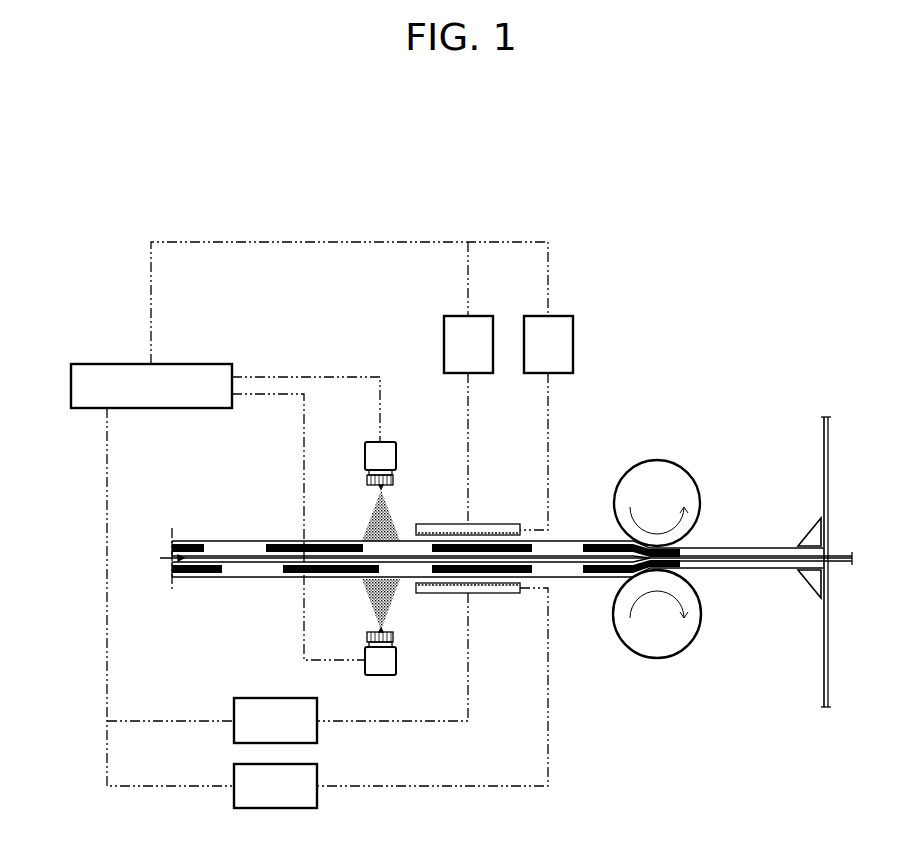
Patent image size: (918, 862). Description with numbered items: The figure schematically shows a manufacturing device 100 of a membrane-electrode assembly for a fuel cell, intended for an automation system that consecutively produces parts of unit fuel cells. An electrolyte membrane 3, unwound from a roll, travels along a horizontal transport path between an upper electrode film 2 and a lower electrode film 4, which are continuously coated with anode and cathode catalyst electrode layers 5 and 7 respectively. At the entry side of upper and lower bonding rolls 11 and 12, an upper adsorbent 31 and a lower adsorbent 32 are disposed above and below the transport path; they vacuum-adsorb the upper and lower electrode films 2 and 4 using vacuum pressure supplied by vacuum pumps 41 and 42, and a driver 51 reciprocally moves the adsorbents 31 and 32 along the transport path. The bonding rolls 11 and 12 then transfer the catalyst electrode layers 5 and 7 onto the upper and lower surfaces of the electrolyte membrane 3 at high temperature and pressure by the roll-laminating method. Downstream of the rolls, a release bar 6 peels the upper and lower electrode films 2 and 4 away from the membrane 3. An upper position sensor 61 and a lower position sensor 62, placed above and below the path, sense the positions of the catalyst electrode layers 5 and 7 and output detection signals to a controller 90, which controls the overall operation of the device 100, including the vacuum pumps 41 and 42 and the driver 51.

The manufacturing device 100 is at (480, 150).
The controller 90 is at (107, 364).
The vacuum pump 41 is at (444, 344).
The driver 51 is at (573, 344).
The vacuum pump 42 is at (275, 698).
The upper position sensor 61 is at (397, 455).
The lower position sensor 62 is at (397, 660).
The upper adsorbent 31 is at (495, 524).
The lower adsorbent 32 is at (497, 593).
The upper electrode film 2 is at (563, 541).
The catalyst electrode layer 5 is at (327, 541).
The lower electrode film 4 is at (565, 577).
The catalyst electrode layer 7 is at (328, 578).
The electrolyte membrane 3 is at (243, 560).
The upper bonding roll 11 is at (656, 460).
The lower bonding roll 12 is at (657, 658).
The release bar 6 is at (810, 530).